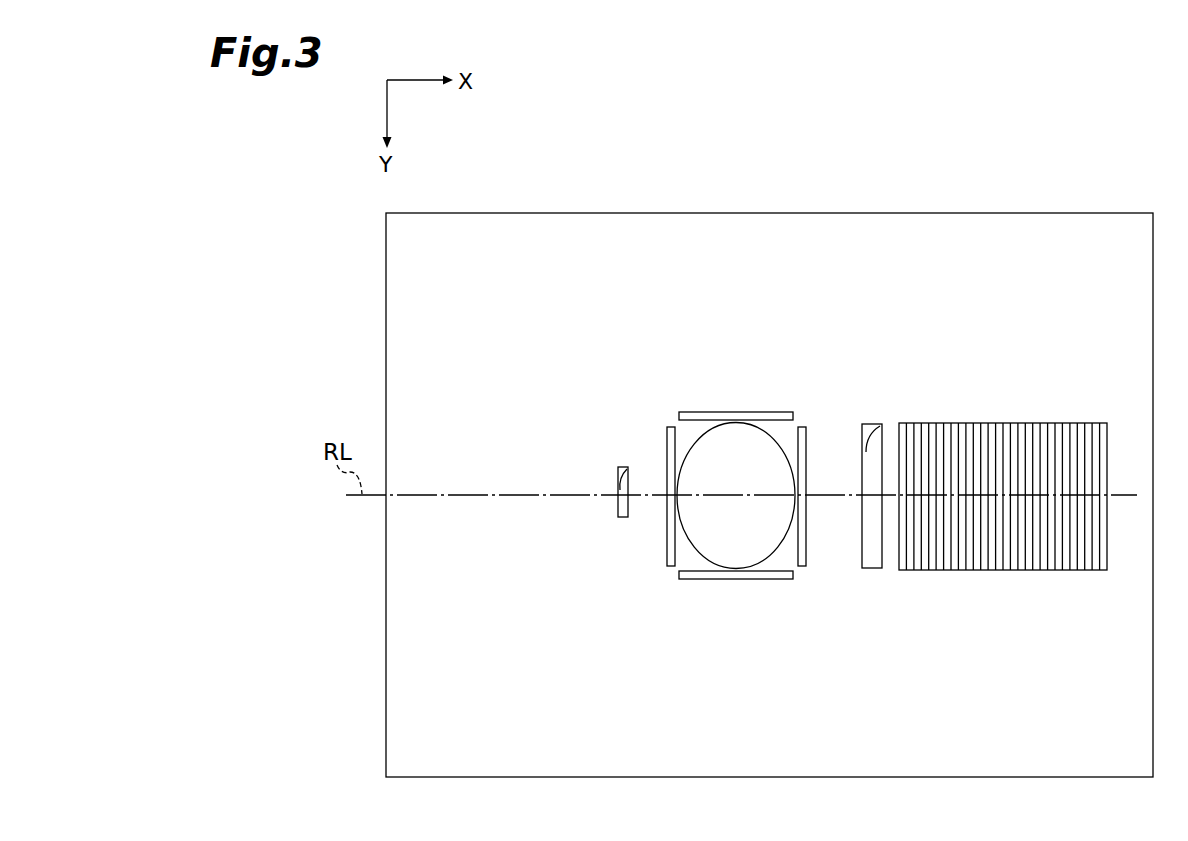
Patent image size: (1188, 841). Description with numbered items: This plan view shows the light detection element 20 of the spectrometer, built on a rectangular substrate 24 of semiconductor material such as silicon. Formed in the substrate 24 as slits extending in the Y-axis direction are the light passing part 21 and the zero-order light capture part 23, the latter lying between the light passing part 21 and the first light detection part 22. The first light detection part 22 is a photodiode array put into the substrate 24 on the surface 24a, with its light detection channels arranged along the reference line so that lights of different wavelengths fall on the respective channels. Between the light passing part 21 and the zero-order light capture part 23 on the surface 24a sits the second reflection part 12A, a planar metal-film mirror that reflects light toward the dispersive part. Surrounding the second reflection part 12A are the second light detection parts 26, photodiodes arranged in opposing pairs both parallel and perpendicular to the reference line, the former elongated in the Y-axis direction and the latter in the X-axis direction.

The light detection element 20 is at (1059, 207).
The light passing part 21 is at (622, 467).
The first light detection part 22 is at (1002, 430).
The zero-order light capture part 23 is at (875, 427).
The substrate 24 is at (477, 770).
The surface of the substrate 24a is at (774, 770).
The second light detection part 26 is at (698, 412).
The second reflection part 12A is at (737, 430).